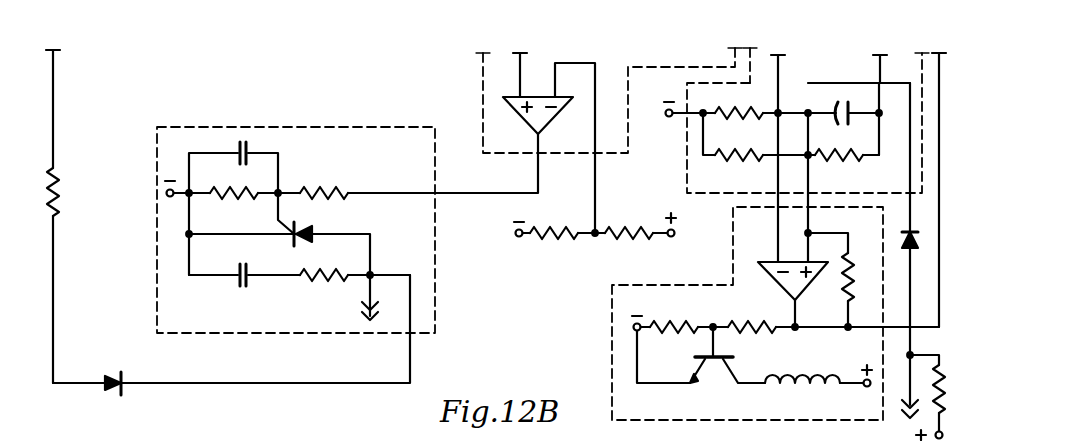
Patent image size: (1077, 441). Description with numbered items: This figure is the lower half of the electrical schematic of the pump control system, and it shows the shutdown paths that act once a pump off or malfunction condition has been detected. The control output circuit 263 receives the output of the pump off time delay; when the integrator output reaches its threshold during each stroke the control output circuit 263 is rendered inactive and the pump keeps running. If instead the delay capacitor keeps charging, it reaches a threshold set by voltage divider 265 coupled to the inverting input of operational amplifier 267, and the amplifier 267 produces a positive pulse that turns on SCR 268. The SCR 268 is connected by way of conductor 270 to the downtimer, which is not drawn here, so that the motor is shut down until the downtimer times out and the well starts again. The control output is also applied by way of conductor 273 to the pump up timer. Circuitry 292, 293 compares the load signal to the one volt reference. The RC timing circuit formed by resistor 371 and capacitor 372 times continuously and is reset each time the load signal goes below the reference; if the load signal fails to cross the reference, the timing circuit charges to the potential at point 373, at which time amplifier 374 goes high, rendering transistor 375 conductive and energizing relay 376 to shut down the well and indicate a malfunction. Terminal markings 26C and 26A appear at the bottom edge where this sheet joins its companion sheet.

The control output circuit 263 is at (315, 127).
The voltage divider 265 is at (595, 240).
The operational amplifier 267 is at (515, 110).
The SCR 268 is at (313, 230).
The conductor 270 is at (370, 281).
The conductor 273 is at (235, 383).
The comparison circuitry 292 is at (687, 138).
The comparison circuitry 293 is at (610, 326).
The resistor 371 is at (748, 120).
The capacitor 372 is at (853, 125).
The point 373 is at (772, 118).
The amplifier 374 is at (785, 280).
The transistor 375 is at (712, 372).
The relay 376 is at (828, 398).
The terminal 26C is at (58, 429).
The terminal 26A is at (144, 429).